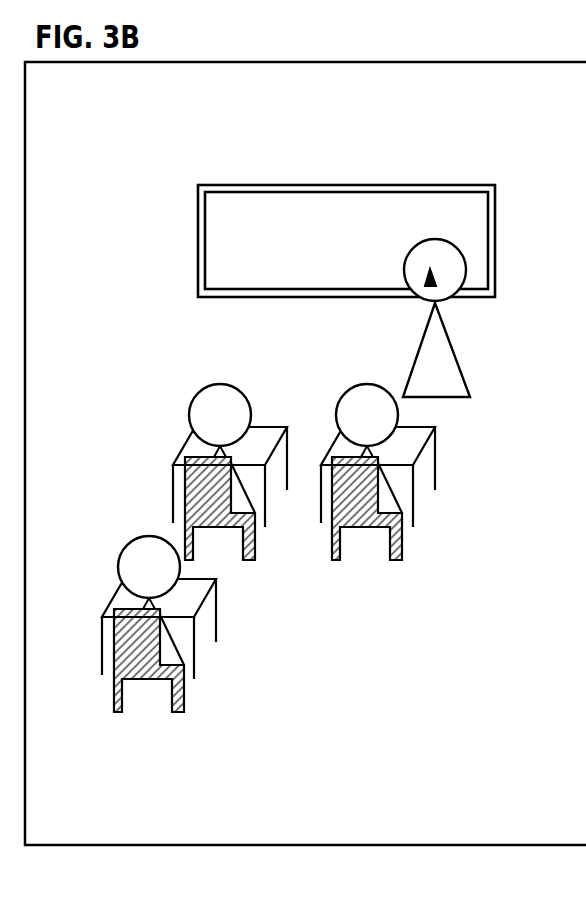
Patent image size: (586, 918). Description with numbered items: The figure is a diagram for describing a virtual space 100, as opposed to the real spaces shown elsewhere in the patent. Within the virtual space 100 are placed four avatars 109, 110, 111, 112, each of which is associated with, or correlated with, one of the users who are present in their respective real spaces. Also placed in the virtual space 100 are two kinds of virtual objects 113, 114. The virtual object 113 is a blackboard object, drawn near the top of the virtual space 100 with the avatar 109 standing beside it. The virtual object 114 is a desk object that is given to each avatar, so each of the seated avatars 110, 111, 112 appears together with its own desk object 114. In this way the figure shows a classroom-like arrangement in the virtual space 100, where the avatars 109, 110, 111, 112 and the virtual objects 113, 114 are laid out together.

The virtual space 100 is at (365, 66).
The avatar 109 is at (453, 273).
The avatar 110 is at (236, 392).
The avatar 111 is at (345, 397).
The avatar 112 is at (121, 568).
The virtual object 113 is at (349, 200).
The virtual object 114 is at (410, 447).